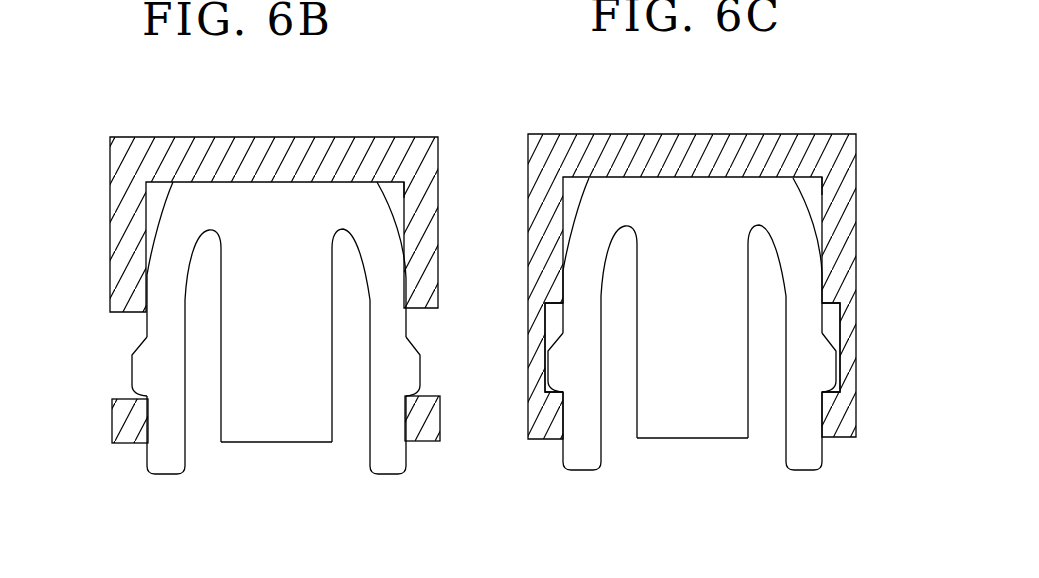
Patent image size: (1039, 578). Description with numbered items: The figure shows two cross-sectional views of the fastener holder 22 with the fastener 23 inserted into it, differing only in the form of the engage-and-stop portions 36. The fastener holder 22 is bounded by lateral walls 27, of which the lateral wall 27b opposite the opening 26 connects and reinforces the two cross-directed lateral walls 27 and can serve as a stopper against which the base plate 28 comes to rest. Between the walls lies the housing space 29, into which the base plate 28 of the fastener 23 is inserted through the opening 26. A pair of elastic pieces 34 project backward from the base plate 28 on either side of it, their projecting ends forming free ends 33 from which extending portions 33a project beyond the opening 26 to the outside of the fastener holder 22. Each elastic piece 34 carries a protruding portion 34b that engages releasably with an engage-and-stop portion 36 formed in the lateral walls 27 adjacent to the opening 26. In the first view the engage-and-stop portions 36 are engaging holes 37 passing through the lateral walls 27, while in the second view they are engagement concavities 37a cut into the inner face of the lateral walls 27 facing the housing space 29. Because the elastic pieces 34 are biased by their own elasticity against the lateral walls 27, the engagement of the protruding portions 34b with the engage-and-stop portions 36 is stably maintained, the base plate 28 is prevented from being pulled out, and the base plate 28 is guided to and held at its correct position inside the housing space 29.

In FIG. 6B, the fastener holder 22 is at (420, 136).
In FIG. 6C, the fastener holder 22 is at (838, 134).
In FIG. 6B, the fastener 23 is at (224, 446).
In FIG. 6C, the fastener 23 is at (678, 447).
In FIG. 6B, the opening 26 is at (347, 460).
In FIG. 6C, the opening 26 is at (693, 367).
In FIG. 6B, the lateral wall 27 is at (110, 190).
In FIG. 6C, the lateral wall 27 is at (527, 218).
In FIG. 6B, the lateral wall 27b is at (283, 137).
In FIG. 6C, the lateral wall 27b is at (653, 134).
In FIG. 6B, the base plate 28 is at (285, 445).
In FIG. 6C, the base plate 28 is at (692, 469).
In FIG. 6B, the housing space 29 is at (404, 192).
In FIG. 6C, the housing space 29 is at (822, 187).
In FIG. 6B, the free end 33 is at (162, 478).
In FIG. 6C, the free end 33 is at (694, 339).
In FIG. 6B, the extending portion 33a is at (276, 435).
In FIG. 6C, the extending portion 33a is at (657, 318).
In FIG. 6B, the elastic piece 34 is at (143, 322).
In FIG. 6C, the elastic piece 34 is at (563, 322).
In FIG. 6B, the protruding portion 34b is at (132, 380).
In FIG. 6C, the protruding portion 34b is at (694, 403).
In FIG. 6B, the engage-and-stop portion 36 is at (112, 400).
In FIG. 6C, the engage-and-stop portion 36 is at (657, 318).
In FIG. 6B, the engaging hole 37 is at (276, 419).
In FIG. 6C, the engagement concavity 37a is at (692, 431).